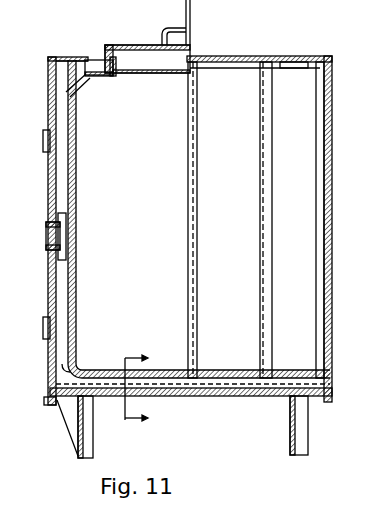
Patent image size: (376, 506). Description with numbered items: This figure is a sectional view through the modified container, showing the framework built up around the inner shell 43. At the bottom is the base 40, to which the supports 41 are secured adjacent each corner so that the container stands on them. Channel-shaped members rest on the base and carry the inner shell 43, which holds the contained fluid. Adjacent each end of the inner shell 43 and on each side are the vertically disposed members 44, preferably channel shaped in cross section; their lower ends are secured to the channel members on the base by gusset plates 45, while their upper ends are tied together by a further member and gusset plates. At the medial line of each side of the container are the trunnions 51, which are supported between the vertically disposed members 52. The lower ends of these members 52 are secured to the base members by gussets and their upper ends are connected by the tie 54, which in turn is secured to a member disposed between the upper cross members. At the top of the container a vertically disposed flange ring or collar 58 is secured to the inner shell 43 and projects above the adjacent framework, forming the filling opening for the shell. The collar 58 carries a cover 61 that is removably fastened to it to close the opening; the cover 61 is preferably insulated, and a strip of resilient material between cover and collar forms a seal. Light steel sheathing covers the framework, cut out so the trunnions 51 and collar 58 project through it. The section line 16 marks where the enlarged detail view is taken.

The section line 16— 16 is at (125, 390).
The base 40 is at (148, 394).
The supports 41 is at (93, 441).
The inner shell 43 is at (74, 318).
The vertically disposed members 44 is at (260, 183).
The gusset plates 45 is at (64, 368).
The trunnions 51 is at (46, 234).
The members 52 is at (60, 192).
The tie 54 is at (58, 67).
The flange ring or collar 58 is at (113, 73).
The cover 61 is at (190, 52).